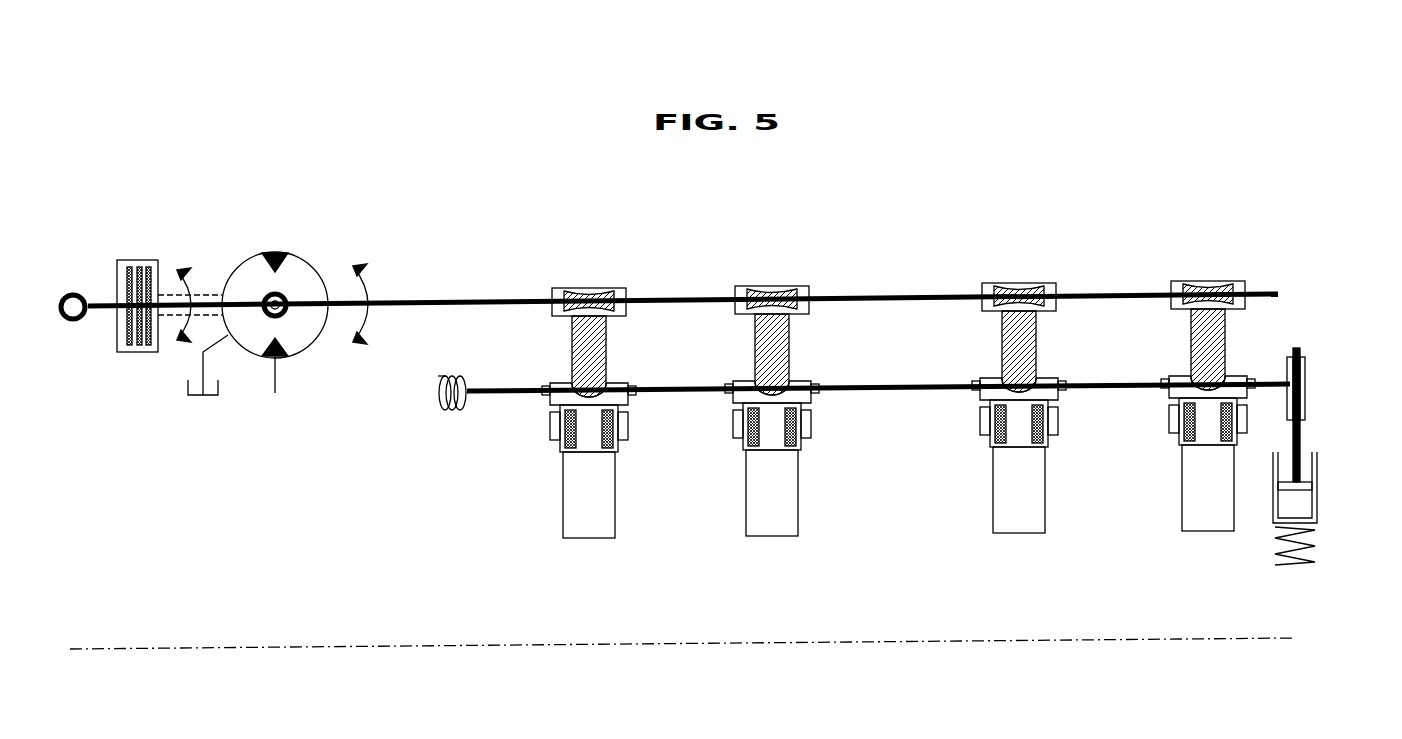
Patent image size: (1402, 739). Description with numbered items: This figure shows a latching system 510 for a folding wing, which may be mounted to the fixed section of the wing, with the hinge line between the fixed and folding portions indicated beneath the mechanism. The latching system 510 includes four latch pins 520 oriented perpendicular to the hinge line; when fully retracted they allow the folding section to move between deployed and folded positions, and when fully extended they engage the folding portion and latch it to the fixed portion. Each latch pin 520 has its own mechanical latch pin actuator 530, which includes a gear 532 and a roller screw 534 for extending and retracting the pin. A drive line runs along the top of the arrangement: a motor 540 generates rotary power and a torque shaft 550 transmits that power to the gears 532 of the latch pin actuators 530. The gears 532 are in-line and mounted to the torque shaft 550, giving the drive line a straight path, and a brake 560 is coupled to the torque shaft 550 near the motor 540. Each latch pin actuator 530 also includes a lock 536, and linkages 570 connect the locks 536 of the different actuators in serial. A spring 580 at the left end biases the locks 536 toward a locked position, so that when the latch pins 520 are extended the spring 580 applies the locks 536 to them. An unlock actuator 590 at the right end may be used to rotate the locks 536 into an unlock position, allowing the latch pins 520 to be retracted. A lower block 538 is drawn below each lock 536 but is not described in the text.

The latching system 510 is at (1085, 177).
The latch pin 520 is at (615, 475).
The mechanical latch pin actuator 530 is at (608, 343).
The gear 532 is at (602, 288).
The roller screw 534 is at (570, 340).
The lock 536 is at (550, 383).
The lower block 538 is at (550, 430).
The motor 540 is at (273, 253).
The torque shaft 550 is at (452, 298).
The brake 560 is at (140, 260).
The linkage 570 is at (868, 390).
The spring 580 is at (440, 410).
The unlock actuator 590 is at (1303, 452).